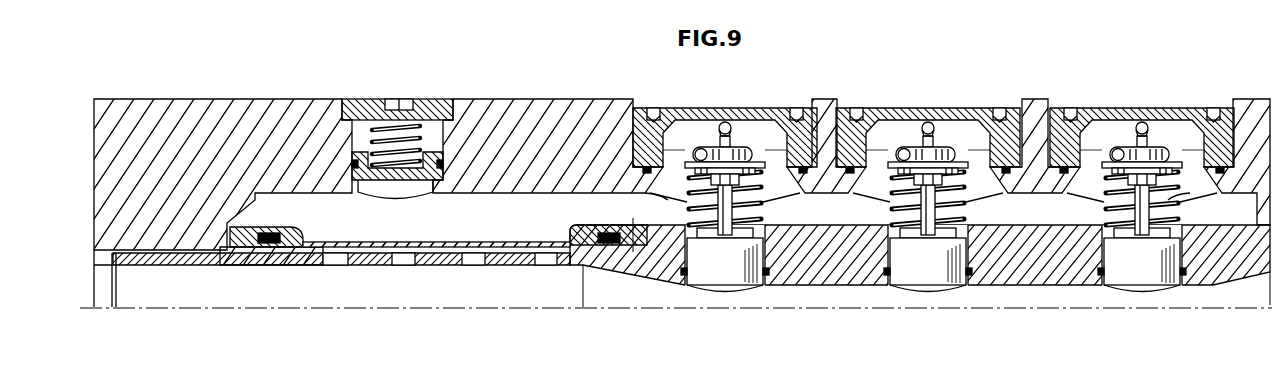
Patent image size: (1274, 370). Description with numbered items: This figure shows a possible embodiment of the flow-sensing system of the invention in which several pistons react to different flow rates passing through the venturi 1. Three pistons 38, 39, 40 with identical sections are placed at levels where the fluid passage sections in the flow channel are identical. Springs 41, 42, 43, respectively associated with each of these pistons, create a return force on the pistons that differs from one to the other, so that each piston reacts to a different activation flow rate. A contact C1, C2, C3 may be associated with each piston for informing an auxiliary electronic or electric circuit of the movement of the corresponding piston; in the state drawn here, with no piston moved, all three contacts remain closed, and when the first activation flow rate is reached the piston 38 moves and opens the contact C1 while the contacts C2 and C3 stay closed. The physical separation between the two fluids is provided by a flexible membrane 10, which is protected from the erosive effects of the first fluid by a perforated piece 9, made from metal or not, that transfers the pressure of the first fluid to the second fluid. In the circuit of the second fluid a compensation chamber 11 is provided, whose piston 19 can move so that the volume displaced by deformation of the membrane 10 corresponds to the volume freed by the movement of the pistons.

The venturi 1 is at (645, 262).
The perforated piece 9 is at (372, 266).
The flexible membrane 10 is at (420, 248).
The compensation chamber 11 is at (358, 132).
The piston of the compensation chamber 19 is at (442, 157).
The piston 38 is at (722, 270).
The piston 39 is at (925, 270).
The piston 40 is at (1128, 270).
The spring 41 is at (788, 168).
The spring 42 is at (982, 168).
The spring 43 is at (1205, 160).
The contact C1 is at (729, 124).
The contact C2 is at (932, 124).
The contact C3 is at (1145, 124).